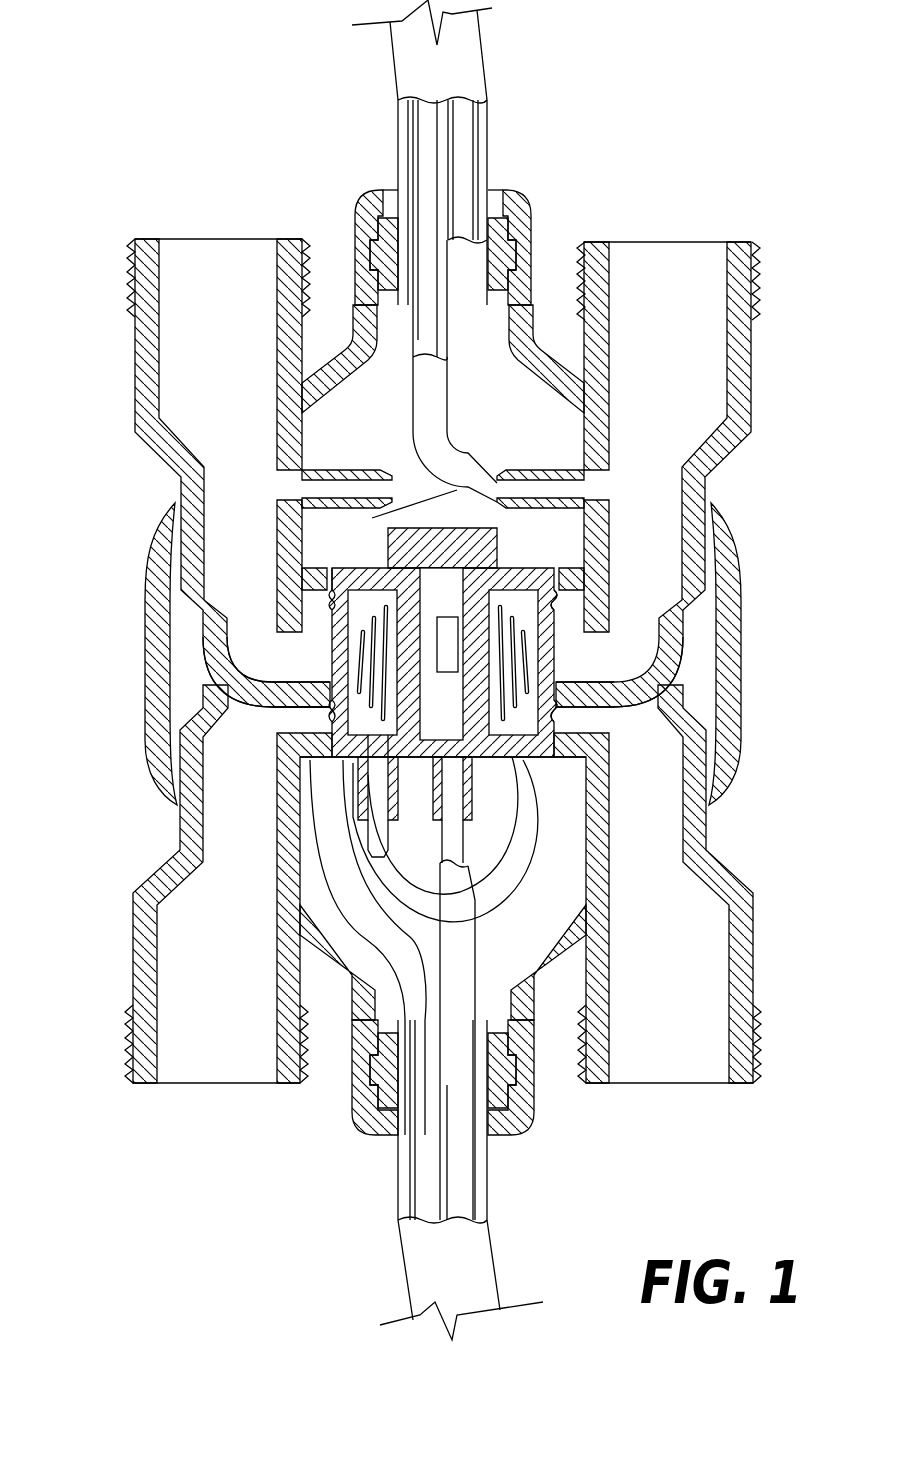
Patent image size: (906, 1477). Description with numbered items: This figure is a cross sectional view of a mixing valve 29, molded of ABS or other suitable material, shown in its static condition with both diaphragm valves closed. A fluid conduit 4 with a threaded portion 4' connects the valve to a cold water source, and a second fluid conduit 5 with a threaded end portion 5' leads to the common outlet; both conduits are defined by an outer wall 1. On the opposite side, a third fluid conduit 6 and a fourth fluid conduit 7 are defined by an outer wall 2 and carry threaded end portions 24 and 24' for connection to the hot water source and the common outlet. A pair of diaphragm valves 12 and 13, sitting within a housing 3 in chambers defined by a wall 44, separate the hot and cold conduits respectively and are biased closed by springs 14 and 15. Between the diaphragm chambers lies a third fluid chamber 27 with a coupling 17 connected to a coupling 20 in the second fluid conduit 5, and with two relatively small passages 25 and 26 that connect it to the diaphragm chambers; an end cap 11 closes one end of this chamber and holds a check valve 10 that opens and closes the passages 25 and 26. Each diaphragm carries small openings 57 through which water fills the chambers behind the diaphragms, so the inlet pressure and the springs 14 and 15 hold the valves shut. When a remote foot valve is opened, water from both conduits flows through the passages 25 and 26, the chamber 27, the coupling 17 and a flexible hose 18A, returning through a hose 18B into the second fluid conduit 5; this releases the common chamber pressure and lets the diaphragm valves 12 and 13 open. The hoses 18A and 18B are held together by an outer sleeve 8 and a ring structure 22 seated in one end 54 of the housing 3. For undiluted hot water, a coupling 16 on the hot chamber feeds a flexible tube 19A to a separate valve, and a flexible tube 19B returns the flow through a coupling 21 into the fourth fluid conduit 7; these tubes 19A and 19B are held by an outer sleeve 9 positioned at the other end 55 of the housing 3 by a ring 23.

The outer wall 1 is at (738, 448).
The outer wall 2 is at (150, 447).
The housing 3 is at (740, 590).
The fluid conduit 4 is at (669, 916).
The threaded portion 4' is at (701, 1044).
The second fluid conduit 5 is at (673, 444).
The threaded end portion 5' is at (715, 281).
The third fluid conduit 6 is at (200, 1065).
The fourth fluid conduit 7 is at (198, 243).
The outer sleeve 8 is at (428, 1270).
The outer sleeve 9 is at (478, 63).
The check valve 10 is at (440, 600).
The end cap 11 is at (480, 549).
The diaphragm valve 12 is at (330, 623).
The diaphragm valve 13 is at (558, 674).
The spring 14 is at (558, 712).
The spring 15 is at (330, 640).
The coupling 16 is at (372, 808).
The coupling 17 is at (450, 798).
The flexible hose 18A is at (500, 951).
The hose 18B is at (342, 883).
The flexible tube 19A is at (430, 422).
The flexible tube 19B is at (466, 255).
The coupling 20 is at (563, 490).
The coupling 21 is at (338, 493).
The ring structure 22 is at (367, 1068).
The ring 23 is at (386, 215).
The threaded end portion 24 is at (181, 1044).
The threaded end portion 24' is at (177, 262).
The passage 25 is at (483, 640).
The passage 26 is at (335, 585).
The third fluid chamber 27 is at (332, 672).
The mixing valve 29 is at (218, 202).
The wall 44 is at (520, 760).
The end of housing 54 is at (370, 1128).
The end of housing 55 is at (527, 227).
The small openings 57 is at (330, 597).